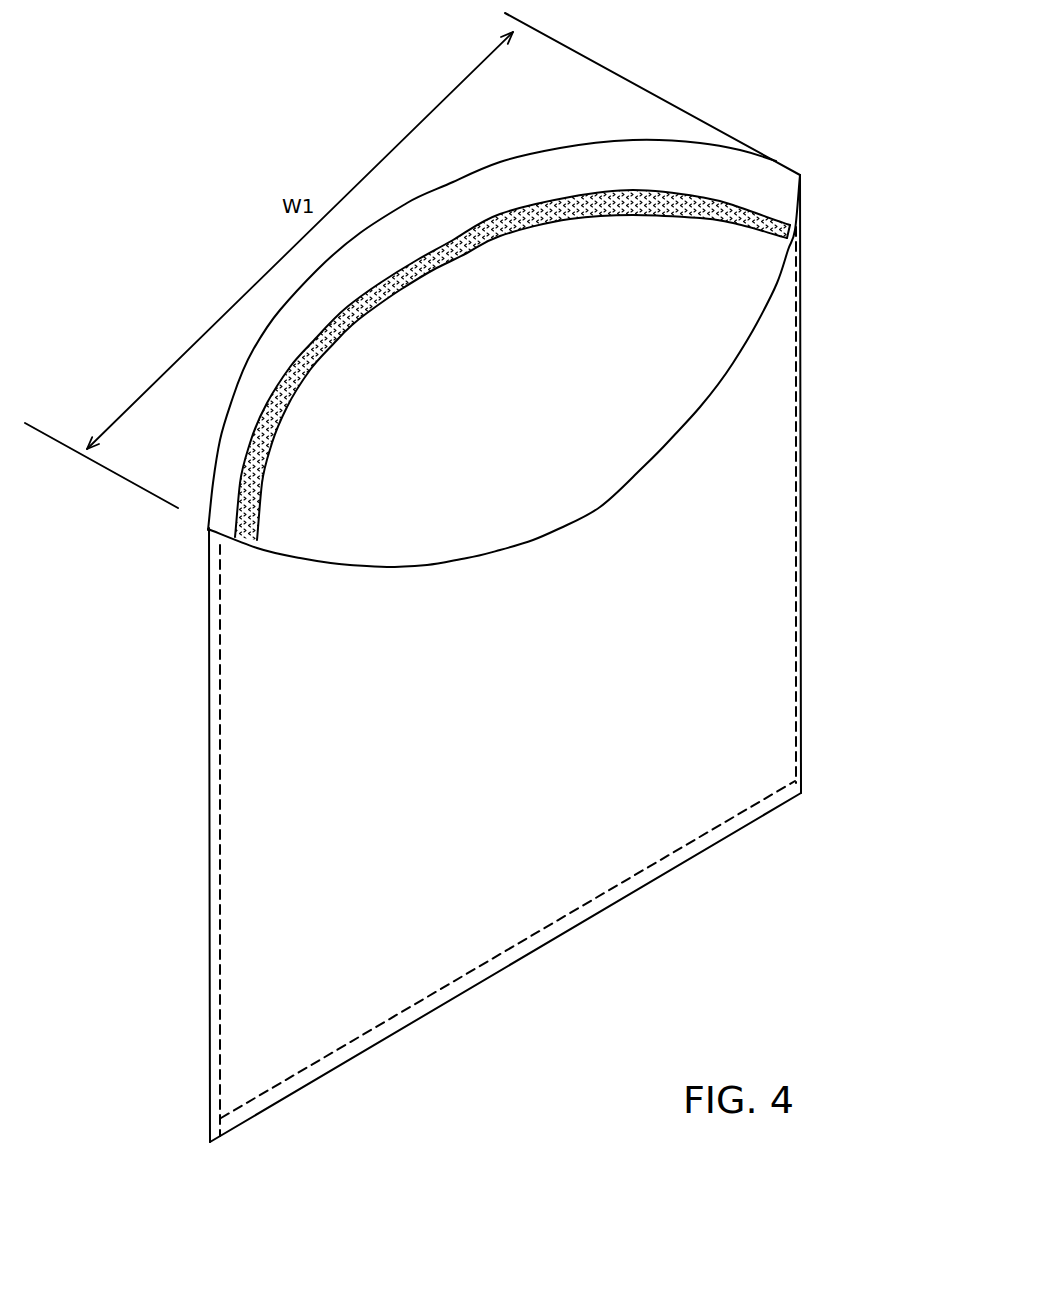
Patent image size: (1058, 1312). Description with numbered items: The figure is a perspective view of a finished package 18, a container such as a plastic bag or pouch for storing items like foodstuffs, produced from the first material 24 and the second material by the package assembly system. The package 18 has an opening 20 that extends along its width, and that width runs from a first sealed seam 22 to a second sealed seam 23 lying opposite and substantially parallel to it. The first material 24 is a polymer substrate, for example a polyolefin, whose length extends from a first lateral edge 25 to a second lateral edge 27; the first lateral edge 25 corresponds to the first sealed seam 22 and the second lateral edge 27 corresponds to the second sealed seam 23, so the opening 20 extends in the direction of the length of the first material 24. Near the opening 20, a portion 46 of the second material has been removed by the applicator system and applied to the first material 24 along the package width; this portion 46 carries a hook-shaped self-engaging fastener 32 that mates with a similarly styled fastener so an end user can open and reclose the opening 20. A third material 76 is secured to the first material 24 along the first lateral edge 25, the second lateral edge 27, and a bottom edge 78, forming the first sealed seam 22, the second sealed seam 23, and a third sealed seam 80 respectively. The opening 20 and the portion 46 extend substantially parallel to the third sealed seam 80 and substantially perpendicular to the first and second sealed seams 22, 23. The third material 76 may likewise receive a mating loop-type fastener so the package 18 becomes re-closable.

The package 18 is at (828, 145).
The opening 20 is at (711, 284).
The first sealed seam 22 is at (799, 390).
The second sealed seam 23 is at (221, 702).
The first material 24 is at (613, 158).
The first lateral edge 25 is at (803, 592).
The second lateral edge 27 is at (208, 635).
The self-engaging fastener 32 is at (452, 245).
The portion of the second material 46 is at (338, 342).
The third material 76 is at (773, 450).
The bottom edge 78 is at (750, 825).
The third sealed seam 80 is at (653, 885).